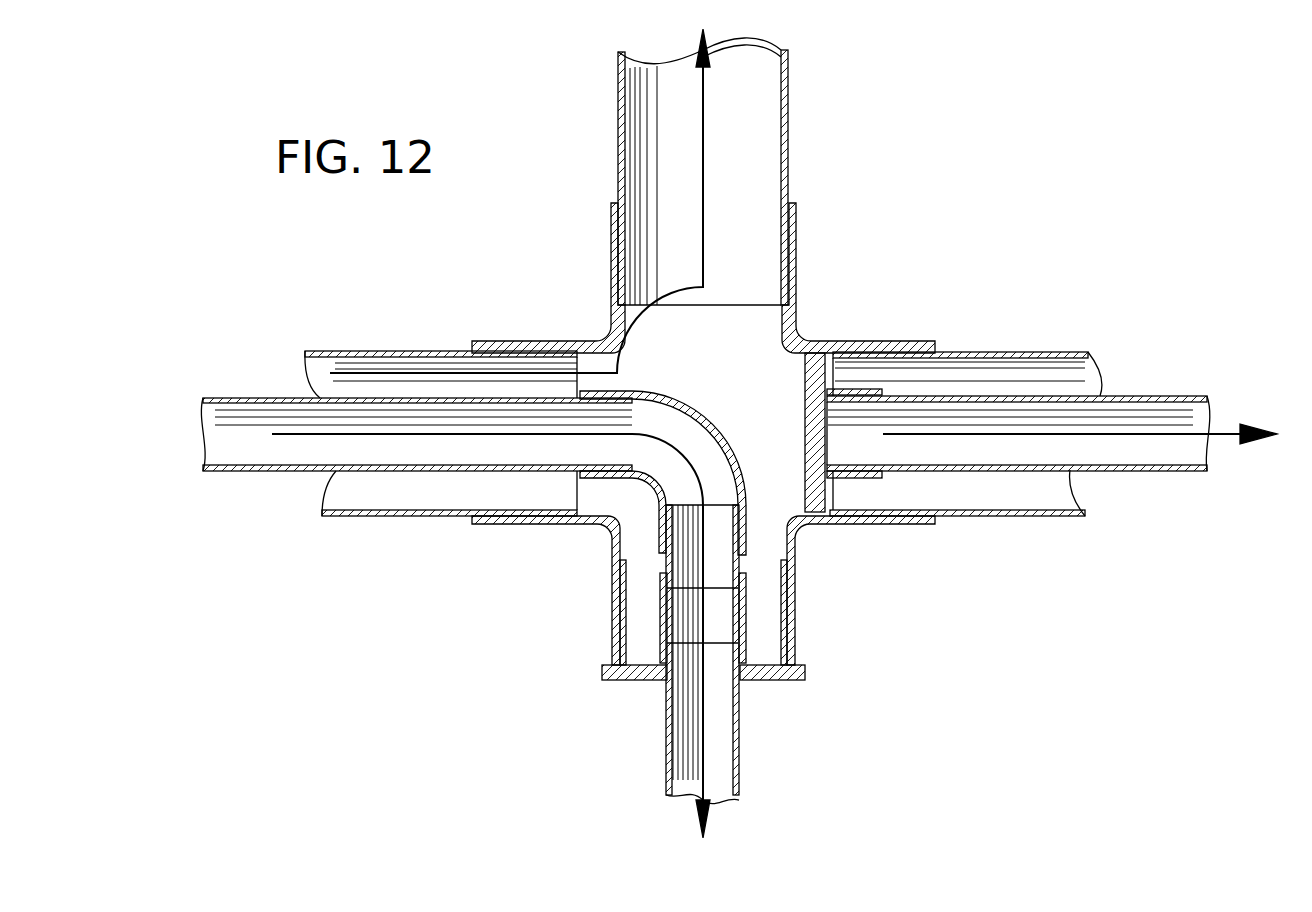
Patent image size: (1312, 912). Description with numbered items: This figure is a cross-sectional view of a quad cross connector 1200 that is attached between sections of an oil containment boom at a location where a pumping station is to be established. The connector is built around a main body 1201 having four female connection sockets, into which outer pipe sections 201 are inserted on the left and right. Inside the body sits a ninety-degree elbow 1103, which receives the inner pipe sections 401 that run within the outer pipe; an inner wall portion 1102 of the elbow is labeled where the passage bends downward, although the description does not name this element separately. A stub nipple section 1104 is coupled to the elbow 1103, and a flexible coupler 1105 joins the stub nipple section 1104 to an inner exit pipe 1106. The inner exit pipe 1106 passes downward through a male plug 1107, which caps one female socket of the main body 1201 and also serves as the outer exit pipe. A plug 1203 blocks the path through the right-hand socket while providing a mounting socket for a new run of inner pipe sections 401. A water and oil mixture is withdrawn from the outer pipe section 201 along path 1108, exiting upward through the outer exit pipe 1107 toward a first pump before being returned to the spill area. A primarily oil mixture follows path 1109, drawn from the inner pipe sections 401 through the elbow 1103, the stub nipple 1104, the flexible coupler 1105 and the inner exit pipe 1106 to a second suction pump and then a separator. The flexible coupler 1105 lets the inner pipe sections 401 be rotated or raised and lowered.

The outer pipe section 201 is at (440, 500).
The inner pipe section 401 is at (318, 450).
The elbow inner wall 1102 is at (658, 482).
The 90-degree elbow 1103 is at (665, 565).
The stub nipple section 1104 is at (740, 612).
The flexible coupler 1105 is at (668, 720).
The inner exit pipe 1106 is at (763, 673).
The male plug 1107 is at (735, 142).
The path 1108 is at (703, 173).
The path 1109 is at (702, 737).
The quad cross connector 1200 is at (837, 567).
The main body 1201 is at (597, 523).
The plug 1203 is at (833, 480).